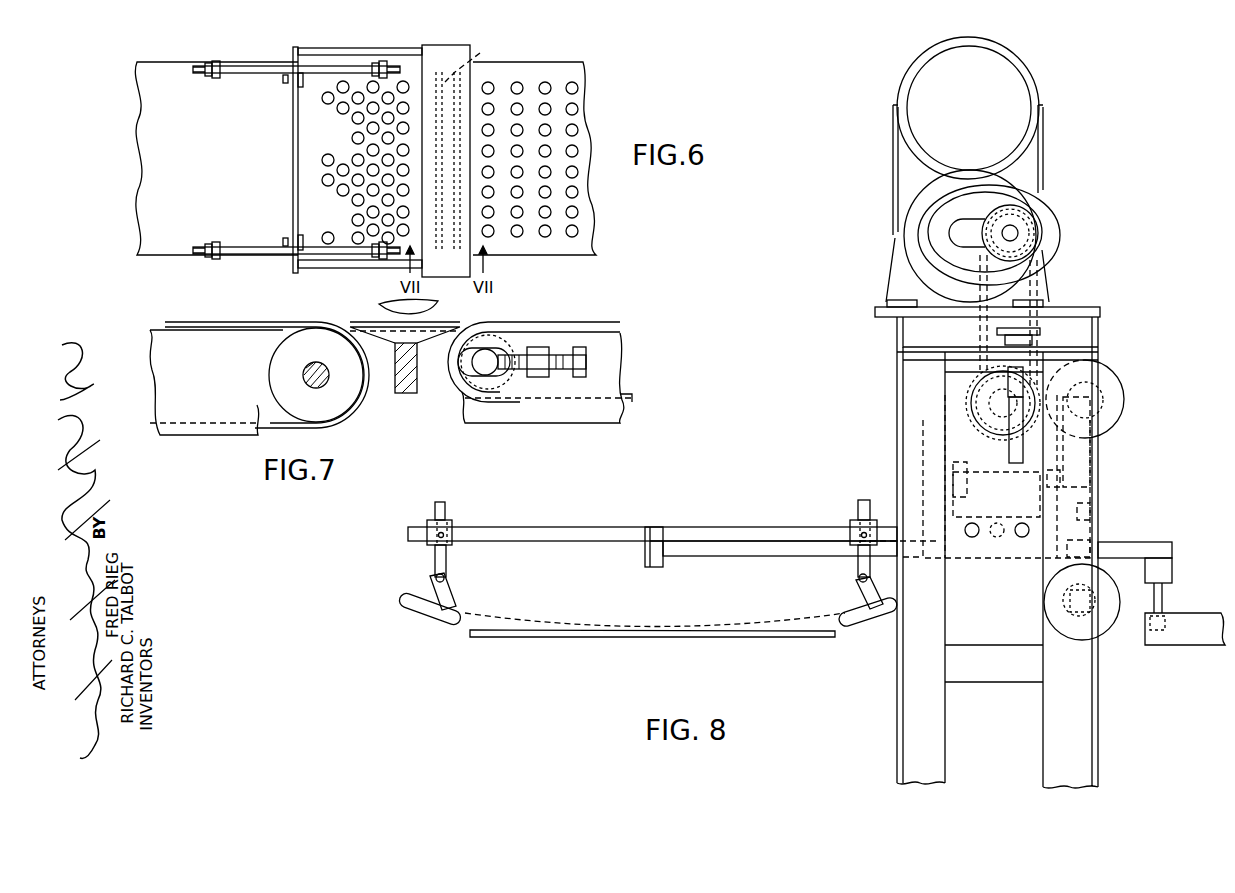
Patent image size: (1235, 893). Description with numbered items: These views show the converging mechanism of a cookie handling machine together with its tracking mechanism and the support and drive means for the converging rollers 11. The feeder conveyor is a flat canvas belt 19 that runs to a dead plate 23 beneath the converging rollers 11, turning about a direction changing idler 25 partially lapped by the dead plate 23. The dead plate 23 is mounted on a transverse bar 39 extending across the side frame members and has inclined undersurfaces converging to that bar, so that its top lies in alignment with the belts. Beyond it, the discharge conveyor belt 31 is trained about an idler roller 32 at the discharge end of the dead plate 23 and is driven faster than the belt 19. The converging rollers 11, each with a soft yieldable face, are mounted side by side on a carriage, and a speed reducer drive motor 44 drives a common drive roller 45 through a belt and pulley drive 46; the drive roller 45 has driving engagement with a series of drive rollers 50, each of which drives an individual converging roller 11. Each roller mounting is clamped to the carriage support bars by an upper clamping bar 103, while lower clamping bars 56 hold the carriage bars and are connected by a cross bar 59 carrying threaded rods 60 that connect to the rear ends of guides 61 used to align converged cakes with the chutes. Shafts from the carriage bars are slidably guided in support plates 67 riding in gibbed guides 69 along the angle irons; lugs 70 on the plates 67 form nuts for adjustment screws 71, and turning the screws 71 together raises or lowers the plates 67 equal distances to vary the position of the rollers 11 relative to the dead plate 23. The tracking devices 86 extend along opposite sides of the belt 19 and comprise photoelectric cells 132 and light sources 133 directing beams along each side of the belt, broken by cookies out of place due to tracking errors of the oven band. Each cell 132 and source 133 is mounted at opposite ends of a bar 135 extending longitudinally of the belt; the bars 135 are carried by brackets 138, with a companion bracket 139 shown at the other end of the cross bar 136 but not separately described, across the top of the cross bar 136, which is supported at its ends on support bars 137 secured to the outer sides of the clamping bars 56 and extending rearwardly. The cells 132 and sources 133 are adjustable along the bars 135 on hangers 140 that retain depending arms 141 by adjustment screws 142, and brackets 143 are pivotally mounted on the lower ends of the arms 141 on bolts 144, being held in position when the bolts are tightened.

In FIG. 6, the converging rollers 11 is at (480, 53).
In FIG. 7, the converging rollers 11 is at (379, 306).
In FIG. 8, the converging rollers 11 is at (1108, 625).
In FIG. 6, the canvas belt 19 is at (152, 219).
In FIG. 7, the canvas belt 19 is at (287, 326).
In FIG. 7, the dead plate 23 is at (439, 326).
In FIG. 7, the direction changing idler 25 is at (270, 396).
In FIG. 7, the conveyor belt 31 is at (535, 322).
In FIG. 7, the idler roller 32 is at (505, 385).
In FIG. 7, the transverse bar 39 is at (410, 395).
In FIG. 8, the drive motor 44 is at (917, 83).
In FIG. 8, the drive roller 45 is at (970, 392).
In FIG. 8, the belt and pulley drive 46 is at (1045, 284).
In FIG. 8, the drive rollers 50 is at (1116, 394).
In FIG. 8, the lower clamping bar 56 is at (1126, 542).
In FIG. 8, the cross bar 59 is at (1172, 571).
In FIG. 8, the threaded rods 60 is at (1165, 599).
In FIG. 8, the guides 61 is at (1192, 633).
In FIG. 8, the support plates 67 is at (997, 568).
In FIG. 8, the gibbed guides 69 is at (922, 445).
In FIG. 8, the lugs 70 is at (1006, 411).
In FIG. 8, the adjustment screws 71 is at (1009, 455).
In FIG. 6, the tracking devices 86 is at (262, 66).
In FIG. 8, the tracking devices 86 is at (703, 528).
In FIG. 8, the upper clamping bar 103 is at (1019, 503).
In FIG. 6, the photoelectric cells 132 is at (219, 80).
In FIG. 8, the photoelectric cells 132 is at (463, 606).
In FIG. 6, the light source 133 is at (390, 64).
In FIG. 8, the light source 133 is at (880, 612).
In FIG. 6, the bar 135 is at (322, 248).
In FIG. 8, the bar 135 is at (601, 527).
In FIG. 6, the cross bar 136 is at (300, 190).
In FIG. 8, the cross bar 136 is at (661, 549).
In FIG. 6, the support bars 137 is at (379, 55).
In FIG. 8, the support bars 137 is at (750, 556).
In FIG. 6, the brackets 138 is at (288, 238).
In FIG. 8, the brackets 138 is at (646, 567).
In FIG. 6, the block 139 is at (289, 93).
In FIG. 8, the hangers 140 is at (452, 522).
In FIG. 8, the depending arms 141 is at (437, 507).
In FIG. 8, the adjustment screws 142 is at (437, 539).
In FIG. 8, the brackets 143 is at (448, 596).
In FIG. 8, the bolts 144 is at (857, 586).